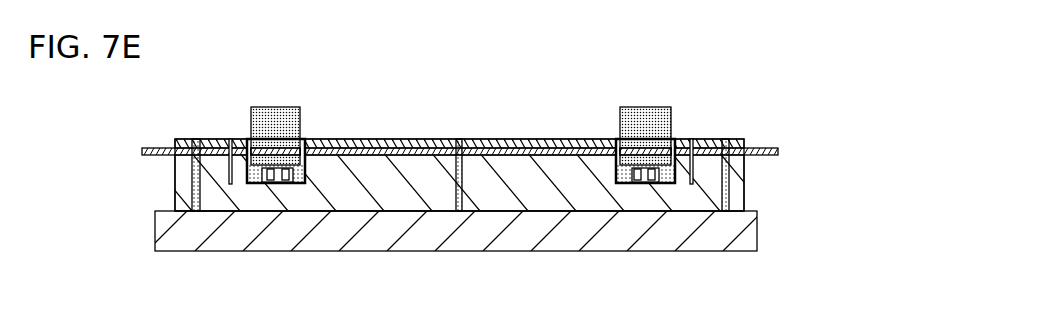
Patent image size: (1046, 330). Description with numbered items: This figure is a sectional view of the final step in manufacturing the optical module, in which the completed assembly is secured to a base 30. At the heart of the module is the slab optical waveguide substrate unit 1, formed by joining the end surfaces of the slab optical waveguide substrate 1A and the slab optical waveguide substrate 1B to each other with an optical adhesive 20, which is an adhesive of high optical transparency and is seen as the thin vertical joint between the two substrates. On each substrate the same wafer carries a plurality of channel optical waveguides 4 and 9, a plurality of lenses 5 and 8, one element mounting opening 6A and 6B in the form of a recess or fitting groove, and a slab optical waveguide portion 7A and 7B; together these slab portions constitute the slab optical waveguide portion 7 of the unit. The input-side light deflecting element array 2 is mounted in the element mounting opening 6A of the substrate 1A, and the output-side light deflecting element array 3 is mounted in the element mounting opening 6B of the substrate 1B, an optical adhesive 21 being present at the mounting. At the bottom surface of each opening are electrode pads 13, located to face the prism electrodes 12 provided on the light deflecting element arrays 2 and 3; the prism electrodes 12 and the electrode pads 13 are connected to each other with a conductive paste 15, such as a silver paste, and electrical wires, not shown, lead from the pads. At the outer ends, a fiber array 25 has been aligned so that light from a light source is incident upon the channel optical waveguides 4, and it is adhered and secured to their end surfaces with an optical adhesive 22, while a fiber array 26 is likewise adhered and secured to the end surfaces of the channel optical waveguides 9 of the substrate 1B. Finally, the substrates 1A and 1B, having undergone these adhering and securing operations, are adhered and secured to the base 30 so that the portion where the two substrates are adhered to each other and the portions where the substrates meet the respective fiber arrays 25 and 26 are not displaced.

The slab optical waveguide substrate unit 1 is at (358, 33).
The slab optical waveguide substrate 1A is at (370, 138).
The slab optical waveguide substrate 1B is at (528, 138).
The input-side light deflecting element array 2 is at (281, 106).
The output-side light deflecting element array 3 is at (644, 106).
The channel optical waveguides 4 is at (208, 138).
The lenses 5 is at (230, 138).
The element mounting opening 6A is at (306, 138).
The element mounting opening 6B is at (614, 138).
The slab optical waveguide portion 7 is at (507, 78).
The slab optical waveguide portion 7A is at (415, 138).
The slab optical waveguide portion 7B is at (500, 138).
The lenses 8 is at (692, 138).
The channel optical waveguides 9 is at (712, 138).
The prism electrodes 12 is at (256, 176).
The electrode pads 13 is at (269, 180).
The conductive paste 15 is at (284, 180).
The optical adhesive 20 is at (459, 211).
The optical adhesive 21 is at (248, 150).
The optical adhesive 22 is at (196, 139).
The fiber array 25 is at (160, 147).
The fiber array 26 is at (765, 147).
The base 30 is at (508, 253).